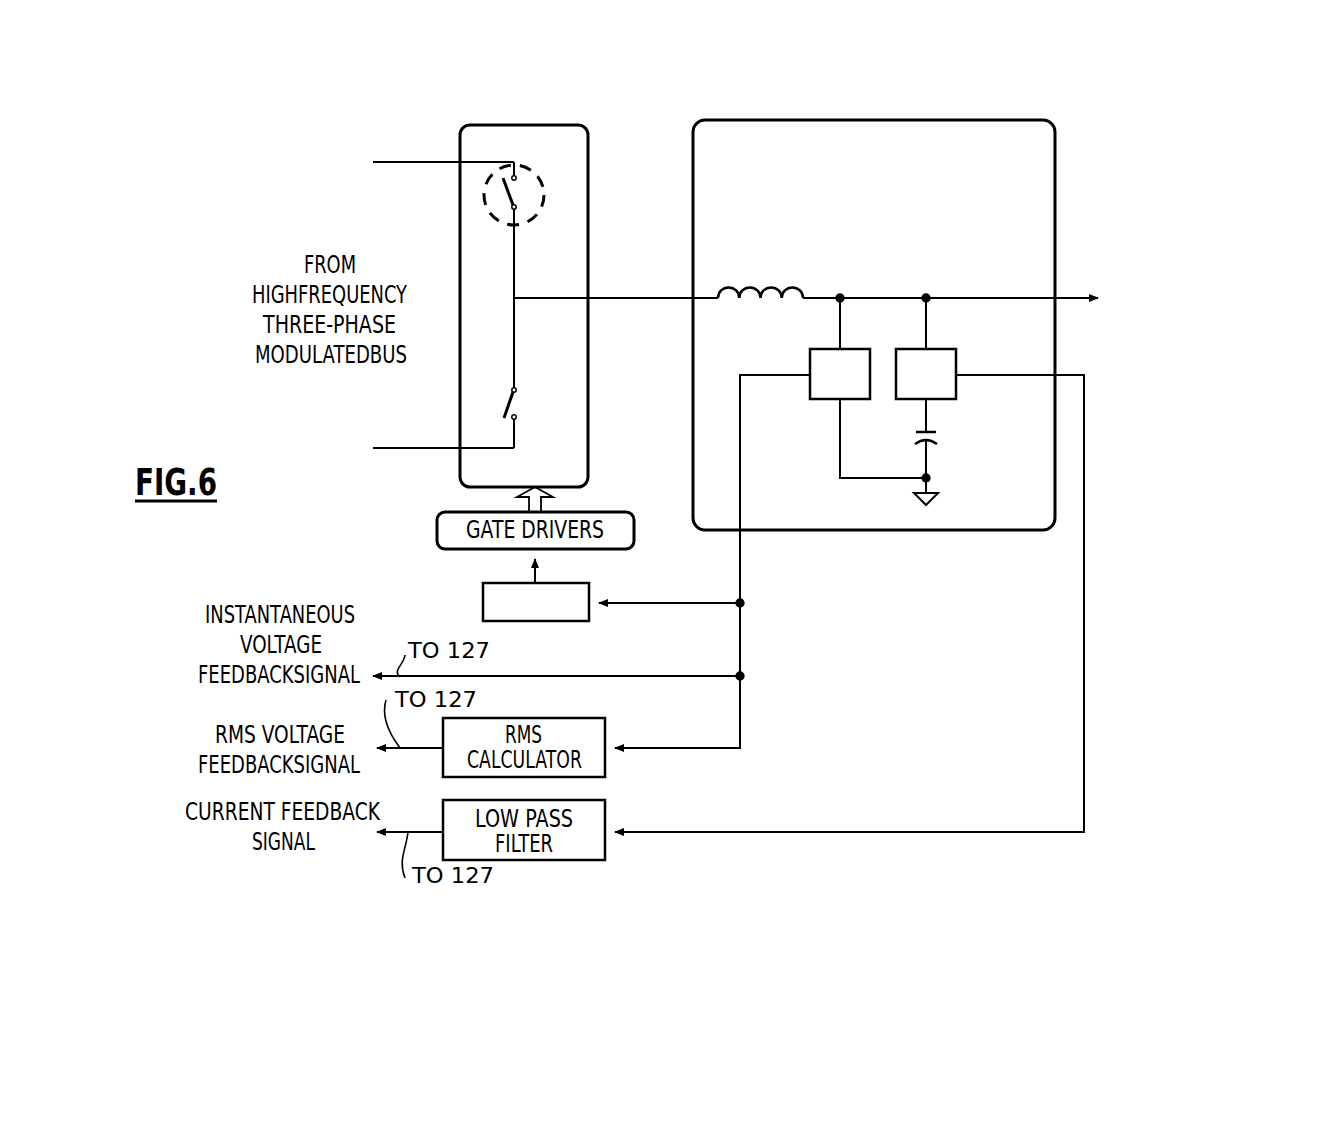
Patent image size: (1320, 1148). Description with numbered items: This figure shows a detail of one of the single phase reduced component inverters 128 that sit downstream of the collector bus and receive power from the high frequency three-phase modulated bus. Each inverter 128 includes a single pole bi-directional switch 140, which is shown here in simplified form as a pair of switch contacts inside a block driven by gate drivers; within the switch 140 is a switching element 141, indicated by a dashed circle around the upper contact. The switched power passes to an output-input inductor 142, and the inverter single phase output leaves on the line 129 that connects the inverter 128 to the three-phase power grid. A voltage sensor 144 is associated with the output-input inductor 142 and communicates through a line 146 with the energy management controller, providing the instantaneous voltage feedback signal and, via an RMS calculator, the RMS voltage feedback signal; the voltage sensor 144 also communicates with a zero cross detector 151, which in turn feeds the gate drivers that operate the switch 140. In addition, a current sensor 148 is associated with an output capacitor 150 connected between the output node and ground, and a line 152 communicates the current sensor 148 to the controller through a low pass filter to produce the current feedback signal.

The single phase reduced component inverter 128 is at (263, 145).
The line 129 is at (1077, 297).
The single pole bi-directional switch 140 is at (472, 196).
The switching element 141 is at (545, 188).
The output-input inductor 142 is at (803, 297).
The voltage sensor 144 is at (856, 349).
The line 146 is at (768, 375).
The current sensor 148 is at (956, 357).
The output capacitor 150 is at (936, 432).
The zero cross detector 151 is at (485, 600).
The line 152 is at (866, 830).